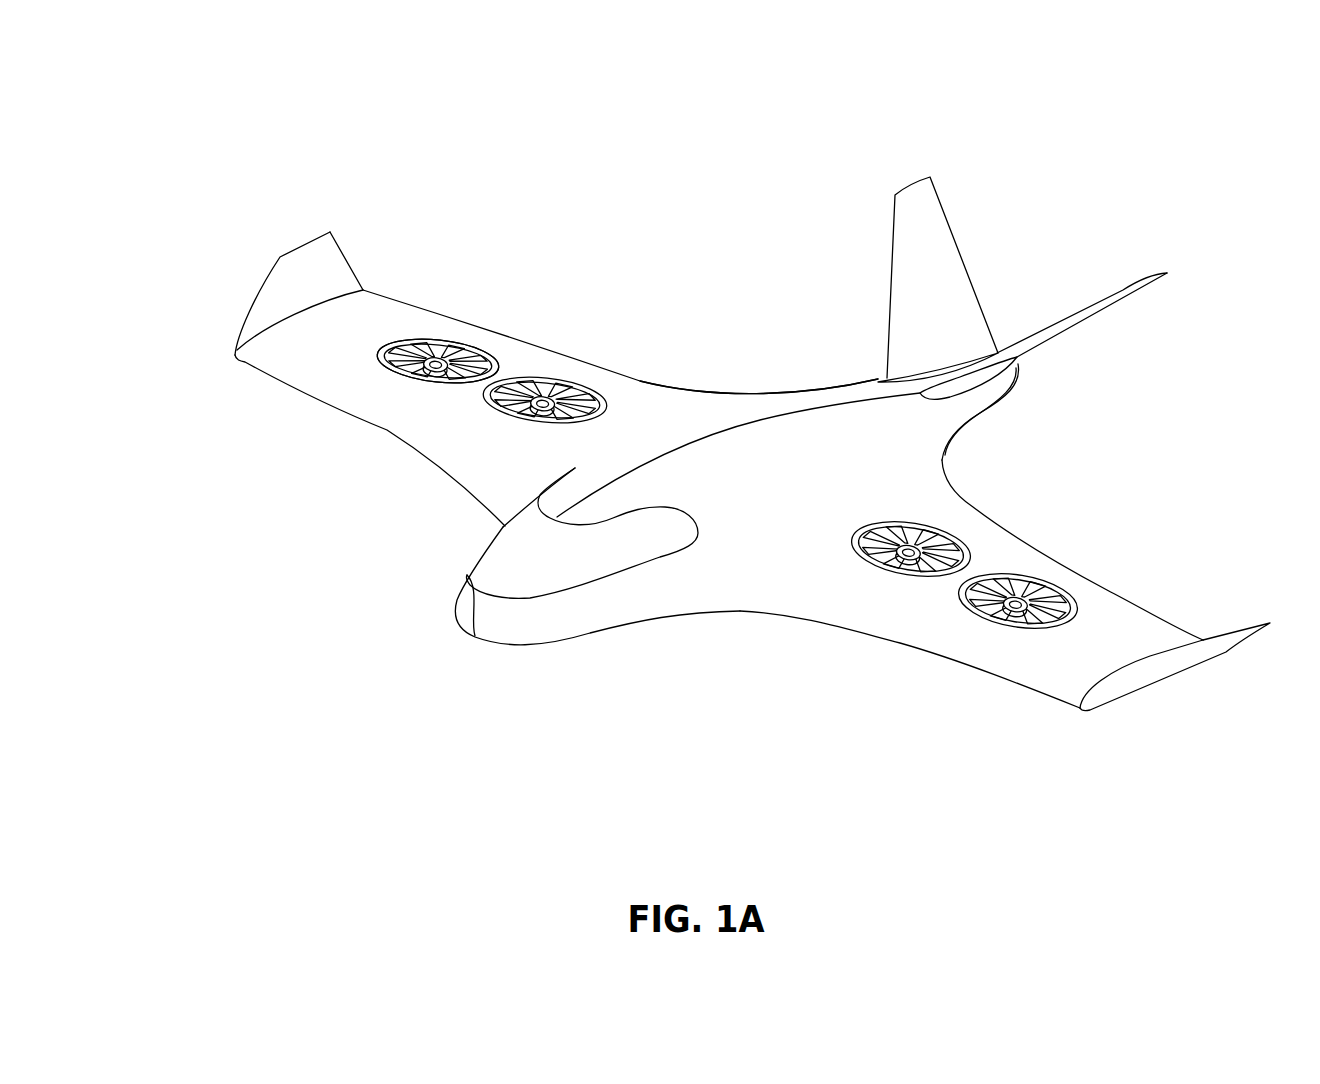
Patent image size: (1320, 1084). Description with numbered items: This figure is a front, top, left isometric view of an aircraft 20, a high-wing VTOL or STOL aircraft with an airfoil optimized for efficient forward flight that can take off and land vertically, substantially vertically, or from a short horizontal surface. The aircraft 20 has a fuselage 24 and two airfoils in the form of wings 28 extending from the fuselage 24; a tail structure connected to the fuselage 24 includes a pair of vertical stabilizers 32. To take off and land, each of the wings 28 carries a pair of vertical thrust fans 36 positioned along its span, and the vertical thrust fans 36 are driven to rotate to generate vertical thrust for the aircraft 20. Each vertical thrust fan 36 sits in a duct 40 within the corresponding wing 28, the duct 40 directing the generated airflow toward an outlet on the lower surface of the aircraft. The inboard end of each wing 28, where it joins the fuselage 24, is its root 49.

The aircraft 20 is at (280, 135).
The fuselage 24 is at (615, 653).
The wing 28 is at (387, 430).
The vertical stabilizer 32 is at (950, 260).
The vertical thrust fan 36 is at (440, 357).
The duct 40 is at (426, 317).
The root 49 is at (777, 376).